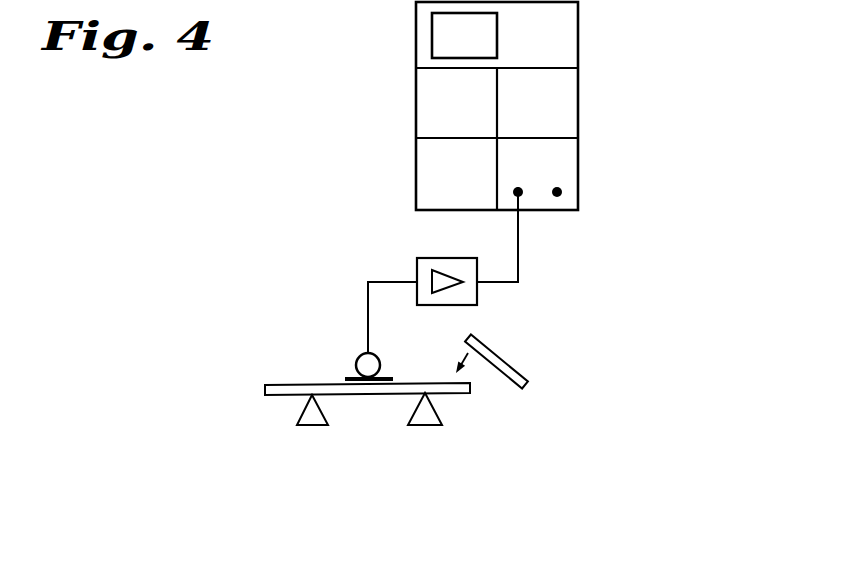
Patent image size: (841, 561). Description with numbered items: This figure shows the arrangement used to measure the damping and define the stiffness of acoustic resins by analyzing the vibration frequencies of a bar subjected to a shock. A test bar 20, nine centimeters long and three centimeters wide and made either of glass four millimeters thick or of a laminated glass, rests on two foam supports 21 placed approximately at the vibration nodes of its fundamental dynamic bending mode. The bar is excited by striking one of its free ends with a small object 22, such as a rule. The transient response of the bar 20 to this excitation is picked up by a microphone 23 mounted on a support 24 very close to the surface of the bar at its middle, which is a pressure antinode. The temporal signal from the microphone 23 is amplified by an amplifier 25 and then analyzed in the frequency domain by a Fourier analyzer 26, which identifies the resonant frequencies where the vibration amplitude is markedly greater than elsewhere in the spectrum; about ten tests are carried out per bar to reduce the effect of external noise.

The bar 20 is at (404, 383).
The foam support 21 is at (305, 414).
The small object 22 is at (507, 360).
The microphone 23 is at (356, 358).
The support 24 is at (350, 378).
The amplifier 25 is at (445, 250).
The Fourier analyzer 26 is at (582, 104).